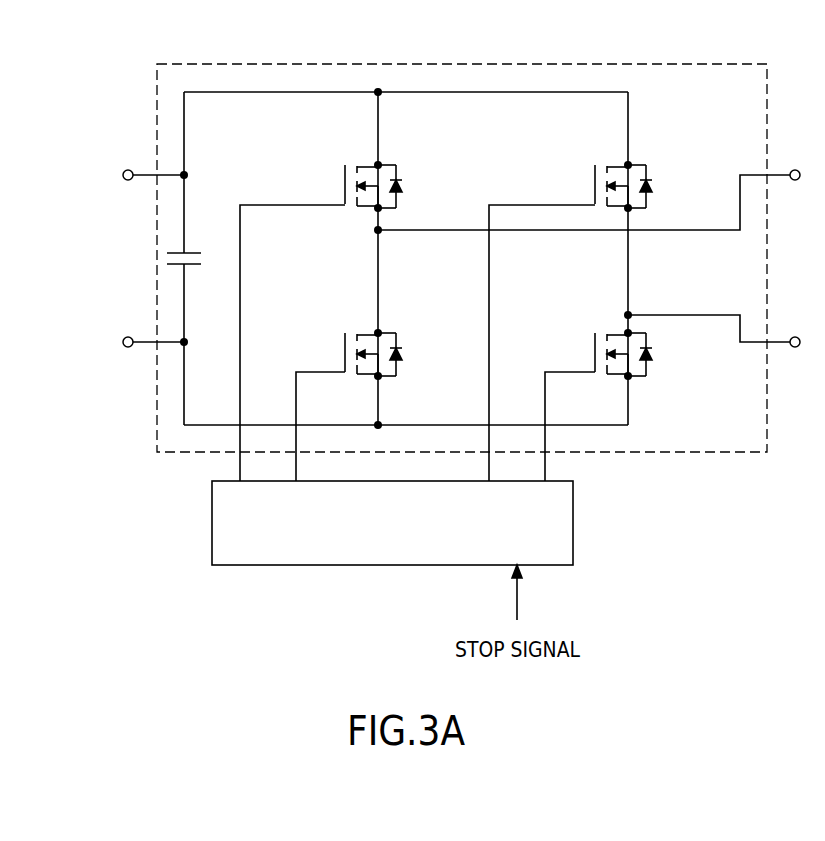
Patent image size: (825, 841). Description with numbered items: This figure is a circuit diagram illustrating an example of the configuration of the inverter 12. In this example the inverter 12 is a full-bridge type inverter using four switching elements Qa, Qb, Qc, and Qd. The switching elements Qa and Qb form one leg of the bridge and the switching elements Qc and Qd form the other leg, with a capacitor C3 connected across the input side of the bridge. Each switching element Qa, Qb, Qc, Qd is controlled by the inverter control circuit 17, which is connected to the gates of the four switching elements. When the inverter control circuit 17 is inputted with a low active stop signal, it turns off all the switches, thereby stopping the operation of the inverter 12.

The inverter 12 is at (461, 64).
The inverter control circuit 17 is at (296, 566).
The capacitor C3 is at (192, 273).
The switching element Qa is at (356, 182).
The switching element Qb is at (356, 350).
The switching element Qc is at (606, 182).
The switching element Qd is at (606, 350).